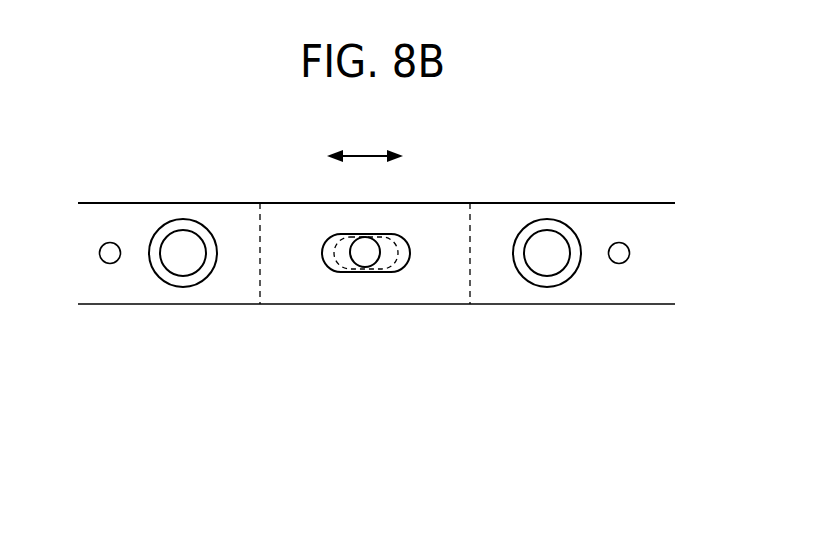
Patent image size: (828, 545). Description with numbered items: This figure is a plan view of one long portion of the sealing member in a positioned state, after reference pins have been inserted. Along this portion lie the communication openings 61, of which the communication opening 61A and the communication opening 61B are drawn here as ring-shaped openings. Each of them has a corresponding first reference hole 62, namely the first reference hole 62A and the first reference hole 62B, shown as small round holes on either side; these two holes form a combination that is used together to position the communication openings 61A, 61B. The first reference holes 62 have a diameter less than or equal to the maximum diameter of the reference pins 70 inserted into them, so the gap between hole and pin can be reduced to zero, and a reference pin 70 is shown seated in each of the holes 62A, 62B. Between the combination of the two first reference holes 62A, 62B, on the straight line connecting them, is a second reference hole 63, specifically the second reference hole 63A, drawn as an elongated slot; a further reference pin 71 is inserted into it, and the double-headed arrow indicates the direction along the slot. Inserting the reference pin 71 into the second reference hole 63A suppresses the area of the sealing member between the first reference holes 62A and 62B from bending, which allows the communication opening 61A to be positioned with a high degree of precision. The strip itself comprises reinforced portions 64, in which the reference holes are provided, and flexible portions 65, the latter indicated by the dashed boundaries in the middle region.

The communication openings 61 is at (384, 296).
The communication opening 61A is at (184, 277).
The communication opening 61B is at (547, 277).
The first reference holes 62 is at (389, 309).
The first reference hole 62A is at (101, 252).
The first reference hole 62B is at (628, 255).
The second reference holes 63 is at (387, 292).
The second reference hole 63A is at (381, 272).
The reinforced portions 64 is at (160, 300).
The flexible portions 65 is at (305, 295).
The reference pins 70 is at (389, 258).
The reference pin 71 is at (367, 250).